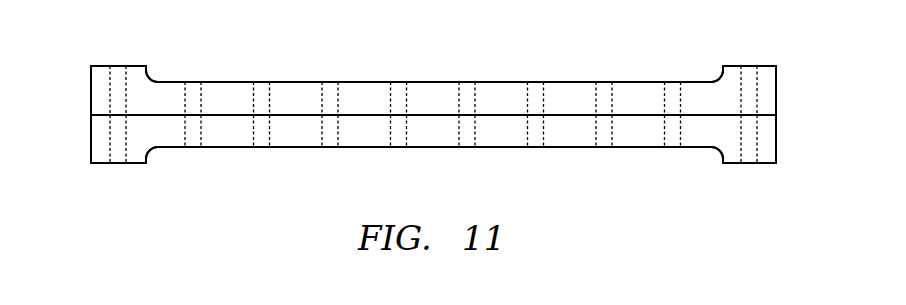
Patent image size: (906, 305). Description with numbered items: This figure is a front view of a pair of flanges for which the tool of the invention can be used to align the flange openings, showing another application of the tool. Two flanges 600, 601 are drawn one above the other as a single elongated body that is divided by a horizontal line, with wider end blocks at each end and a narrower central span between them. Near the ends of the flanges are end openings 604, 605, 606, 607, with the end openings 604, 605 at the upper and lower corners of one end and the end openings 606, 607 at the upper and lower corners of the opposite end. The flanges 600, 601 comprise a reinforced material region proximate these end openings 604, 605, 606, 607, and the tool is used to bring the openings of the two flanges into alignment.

The flange 600 is at (91, 90).
The flange 601 is at (91, 136).
The end opening 604 is at (135, 66).
The end opening 605 is at (135, 163).
The end opening 606 is at (732, 66).
The end opening 607 is at (732, 163).